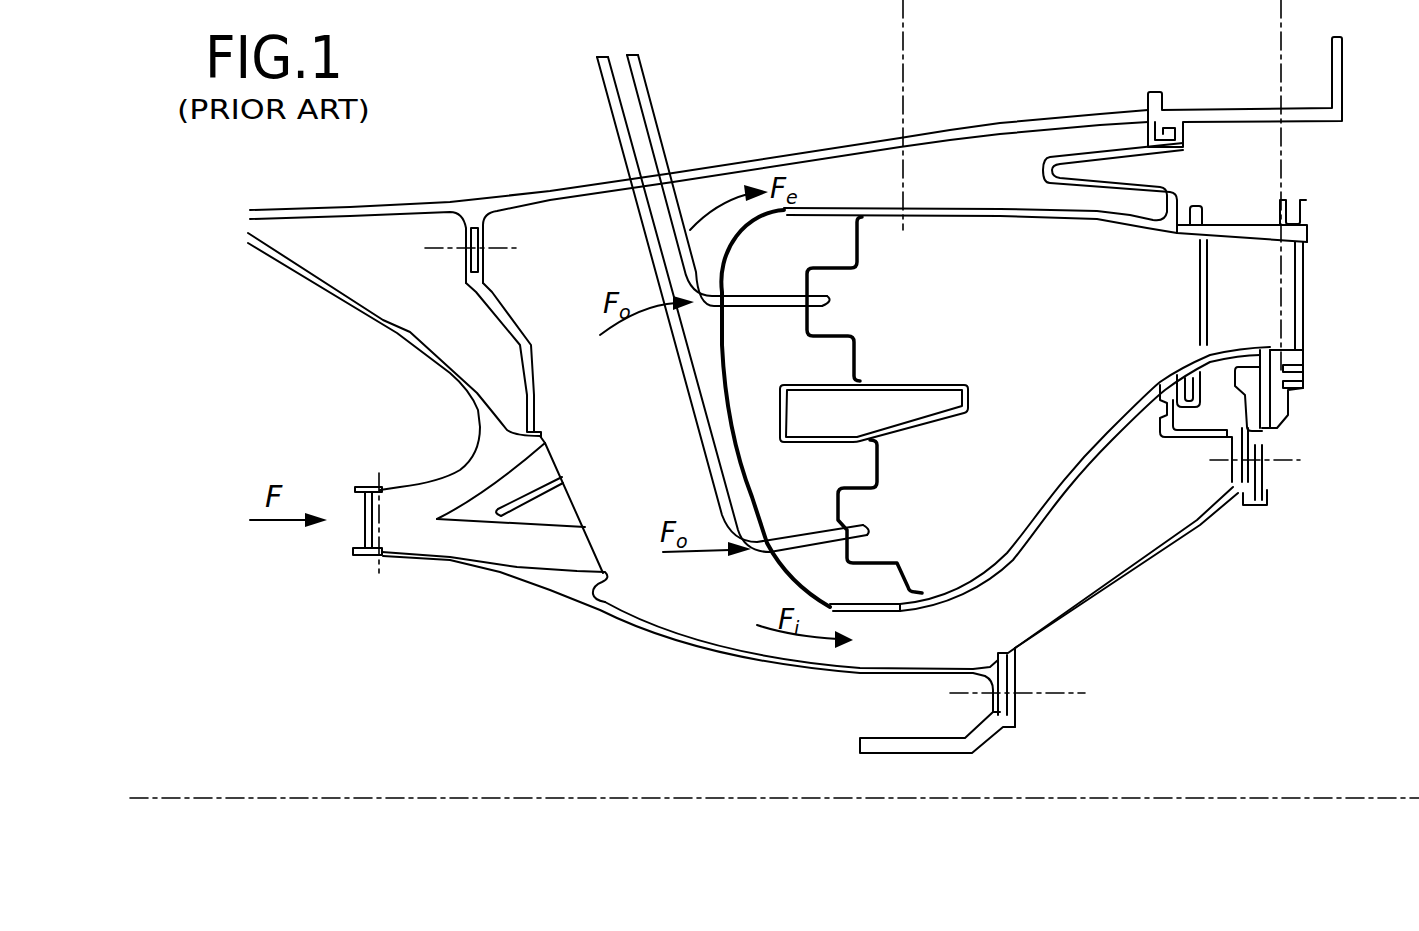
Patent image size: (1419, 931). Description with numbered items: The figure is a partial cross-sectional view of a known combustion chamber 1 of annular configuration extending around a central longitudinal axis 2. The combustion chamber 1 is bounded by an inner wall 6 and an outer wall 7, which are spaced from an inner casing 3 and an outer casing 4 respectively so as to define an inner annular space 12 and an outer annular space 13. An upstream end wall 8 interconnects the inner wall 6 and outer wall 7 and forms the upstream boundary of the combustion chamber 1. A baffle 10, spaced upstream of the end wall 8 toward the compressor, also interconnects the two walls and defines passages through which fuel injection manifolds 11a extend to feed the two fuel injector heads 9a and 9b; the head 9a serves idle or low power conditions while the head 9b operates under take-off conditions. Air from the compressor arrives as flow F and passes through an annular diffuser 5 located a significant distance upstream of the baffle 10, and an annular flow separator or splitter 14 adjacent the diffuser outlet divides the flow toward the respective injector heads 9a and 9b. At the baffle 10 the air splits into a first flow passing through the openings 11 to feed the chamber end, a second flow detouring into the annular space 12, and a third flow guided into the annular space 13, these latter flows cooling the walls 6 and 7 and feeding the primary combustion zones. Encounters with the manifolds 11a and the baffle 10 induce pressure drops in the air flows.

The combustion chamber 1 is at (1120, 328).
The central longitudinal axis 2 is at (536, 799).
The inner casing 3 is at (779, 660).
The outer casing 4 is at (728, 170).
The annular diffuser 5 is at (483, 543).
The inner wall 6 is at (1018, 548).
The outer wall 7 is at (1065, 212).
The upstream end wall 8 is at (881, 474).
The fuel injector head 9a is at (868, 531).
The fuel injector head 9b is at (824, 300).
The baffle 10 is at (720, 352).
The openings 11 is at (715, 290).
The fuel injection manifolds 11a is at (650, 133).
The annular space 12 is at (1005, 635).
The annular space 13 is at (884, 192).
The annular flow separator or splitter 14 is at (545, 471).